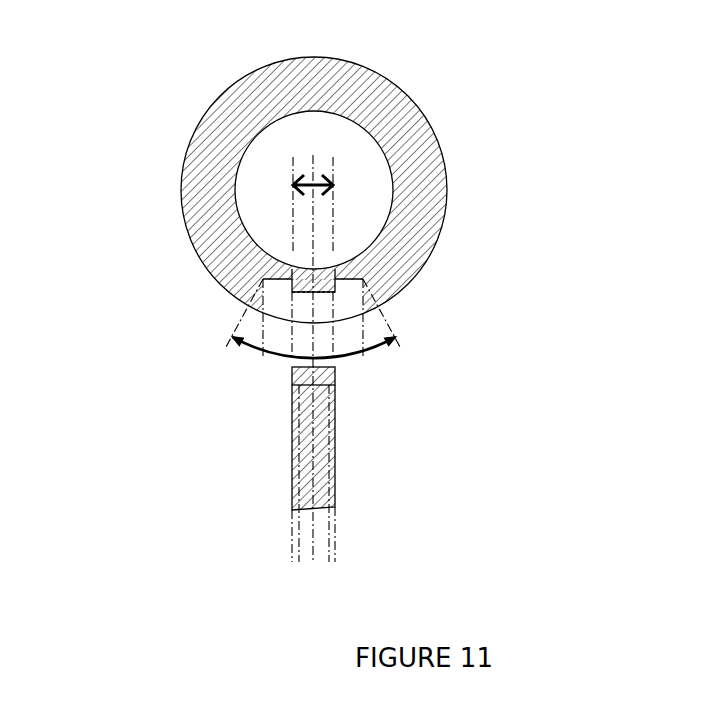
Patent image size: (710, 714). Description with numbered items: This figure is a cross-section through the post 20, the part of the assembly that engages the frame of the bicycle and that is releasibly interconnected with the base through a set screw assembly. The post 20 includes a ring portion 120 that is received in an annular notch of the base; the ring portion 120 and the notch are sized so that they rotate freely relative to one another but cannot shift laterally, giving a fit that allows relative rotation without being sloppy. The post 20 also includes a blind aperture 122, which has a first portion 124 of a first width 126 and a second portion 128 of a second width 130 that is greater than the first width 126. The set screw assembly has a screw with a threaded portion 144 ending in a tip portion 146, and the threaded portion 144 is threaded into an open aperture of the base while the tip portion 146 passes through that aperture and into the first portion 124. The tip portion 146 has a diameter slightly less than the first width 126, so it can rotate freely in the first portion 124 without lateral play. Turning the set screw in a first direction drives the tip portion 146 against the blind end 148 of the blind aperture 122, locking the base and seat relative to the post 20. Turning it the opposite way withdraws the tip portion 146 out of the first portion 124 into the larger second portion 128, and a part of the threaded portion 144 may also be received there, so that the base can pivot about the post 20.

The post 20 is at (135, 202).
The ring portion 120 is at (427, 168).
The blind aperture 122 is at (462, 304).
The first portion 124 is at (295, 278).
The first width 126 is at (313, 196).
The second portion 128 is at (373, 295).
The second width 130 is at (266, 357).
The threaded portion 144 is at (325, 409).
The tip portion 146 is at (293, 377).
The blind end 148 is at (335, 270).